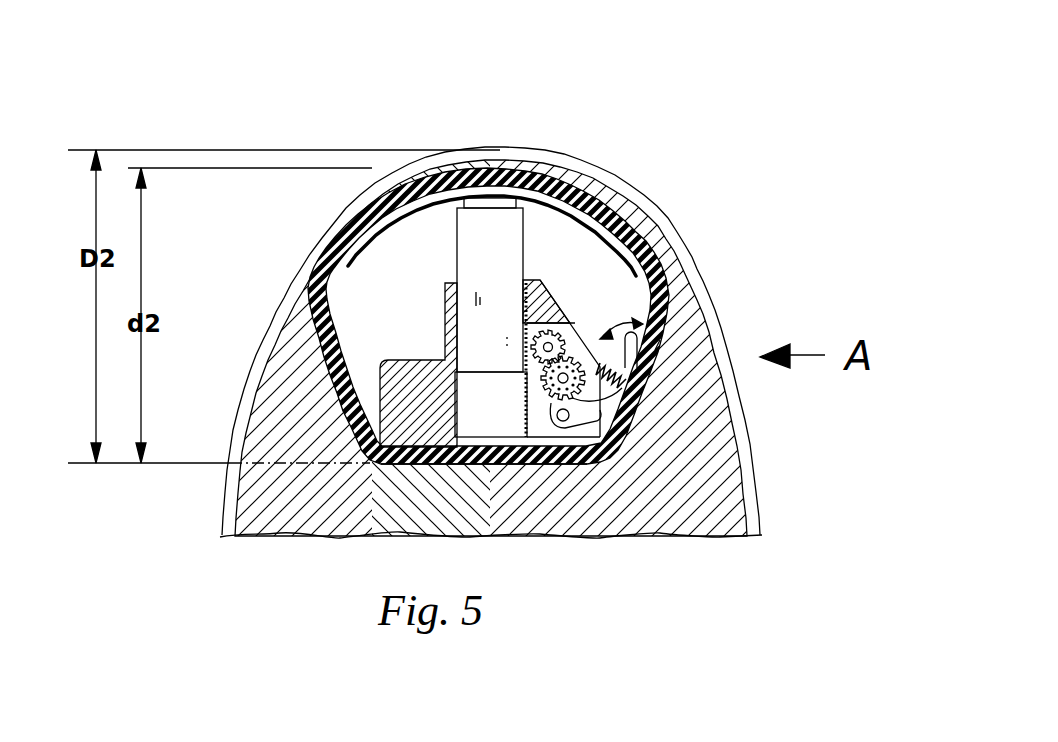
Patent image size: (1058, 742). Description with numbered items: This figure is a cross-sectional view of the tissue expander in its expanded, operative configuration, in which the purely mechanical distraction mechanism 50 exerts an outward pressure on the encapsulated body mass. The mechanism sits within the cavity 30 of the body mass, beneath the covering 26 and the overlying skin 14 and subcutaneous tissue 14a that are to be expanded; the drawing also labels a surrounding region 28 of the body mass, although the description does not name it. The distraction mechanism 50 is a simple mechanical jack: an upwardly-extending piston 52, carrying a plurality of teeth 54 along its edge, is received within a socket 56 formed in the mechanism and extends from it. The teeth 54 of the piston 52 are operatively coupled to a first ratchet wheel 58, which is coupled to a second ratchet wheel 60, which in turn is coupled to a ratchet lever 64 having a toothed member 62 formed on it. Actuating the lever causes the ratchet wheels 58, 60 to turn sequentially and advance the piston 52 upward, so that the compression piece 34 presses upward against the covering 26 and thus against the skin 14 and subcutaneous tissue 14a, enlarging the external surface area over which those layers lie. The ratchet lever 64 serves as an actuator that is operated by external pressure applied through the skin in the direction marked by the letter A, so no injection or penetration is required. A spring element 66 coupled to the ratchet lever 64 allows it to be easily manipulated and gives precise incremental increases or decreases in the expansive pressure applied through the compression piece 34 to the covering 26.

The skin 14 is at (608, 182).
The subcutaneous tissue 14a is at (637, 217).
The covering 26 is at (655, 350).
The hatched body 28 is at (729, 469).
The cavity 30 is at (360, 293).
The compression piece 34 is at (483, 192).
The distraction mechanism 50 is at (373, 466).
The piston 52 is at (477, 244).
The teeth 54 is at (530, 272).
The socket 56 is at (492, 422).
The first ratchet wheel 58 is at (572, 335).
The second ratchet wheel 60 is at (583, 345).
The toothed member 62 is at (578, 402).
The ratchet lever 64 is at (598, 413).
The spring element 66 is at (648, 395).